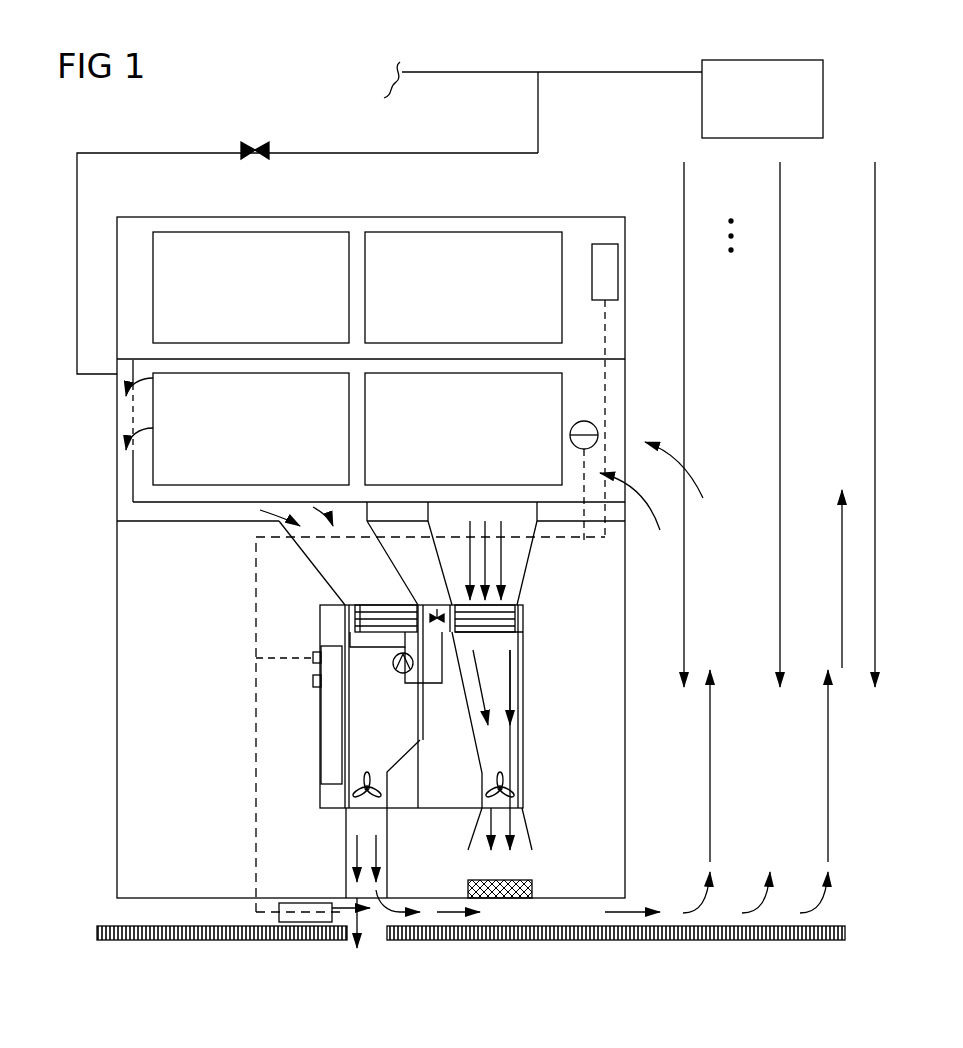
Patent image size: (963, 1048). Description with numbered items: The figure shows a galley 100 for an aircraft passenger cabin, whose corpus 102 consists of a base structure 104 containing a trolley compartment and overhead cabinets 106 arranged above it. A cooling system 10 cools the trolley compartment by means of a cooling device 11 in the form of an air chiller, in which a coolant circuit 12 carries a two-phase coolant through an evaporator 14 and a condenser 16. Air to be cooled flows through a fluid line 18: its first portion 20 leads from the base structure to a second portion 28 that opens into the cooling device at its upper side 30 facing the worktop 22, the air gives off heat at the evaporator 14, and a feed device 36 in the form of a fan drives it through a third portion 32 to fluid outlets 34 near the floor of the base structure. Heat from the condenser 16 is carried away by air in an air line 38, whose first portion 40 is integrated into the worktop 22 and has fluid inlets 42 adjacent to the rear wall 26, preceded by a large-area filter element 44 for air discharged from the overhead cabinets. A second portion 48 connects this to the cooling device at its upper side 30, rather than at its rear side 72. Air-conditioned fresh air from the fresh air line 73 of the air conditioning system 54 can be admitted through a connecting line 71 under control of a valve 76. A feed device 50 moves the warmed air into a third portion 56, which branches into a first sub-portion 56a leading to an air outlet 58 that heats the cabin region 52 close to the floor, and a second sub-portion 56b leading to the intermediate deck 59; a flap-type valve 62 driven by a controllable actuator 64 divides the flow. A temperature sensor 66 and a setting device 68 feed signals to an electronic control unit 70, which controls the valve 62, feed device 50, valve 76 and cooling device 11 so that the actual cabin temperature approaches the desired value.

The cooling system 10 is at (620, 622).
The cooling device 11 is at (524, 712).
The coolant circuit 12 is at (428, 690).
The evaporator 14 is at (524, 628).
The condenser 16 is at (360, 605).
The fluid line 18 is at (546, 580).
The first portion of the fluid line 20 is at (510, 516).
The worktop 22 is at (627, 511).
The rear wall 26 is at (116, 698).
The second portion of the fluid line 28 is at (535, 547).
The upper side of the cooling device 30 is at (430, 605).
The third portion of the fluid line 32 is at (534, 836).
The fluid outlets 34 is at (538, 888).
The feed device 36 is at (511, 780).
The air line 38 is at (282, 568).
The first portion of the air line 40 is at (200, 522).
The fluid inlets 42 is at (124, 490).
The filter element 44 is at (126, 430).
The second portion of the air line 48 is at (316, 578).
The feed device 50 is at (378, 786).
The cabin region 52 is at (752, 366).
The air conditioning system 54 is at (702, 98).
The third portion of the air line 56 is at (392, 858).
The first sub-portion 56a is at (514, 926).
The second sub-portion 56b is at (368, 928).
The air outlet 58 is at (628, 902).
The intermediate deck 59 is at (760, 968).
The valve 62 is at (428, 912).
The controllable actuator 64 is at (306, 903).
The temperature sensor 66 is at (594, 423).
The setting device 68 is at (620, 262).
The electronic control unit 70 is at (328, 746).
The connecting line 71 is at (176, 147).
The rear side of the cooling device 72 is at (321, 700).
The fresh air line 73 is at (470, 72).
The valve 76 is at (258, 141).
The galley 100 is at (442, 168).
The corpus 102 is at (372, 217).
The base structure 104 is at (626, 767).
The overhead cabinets 106 is at (640, 335).